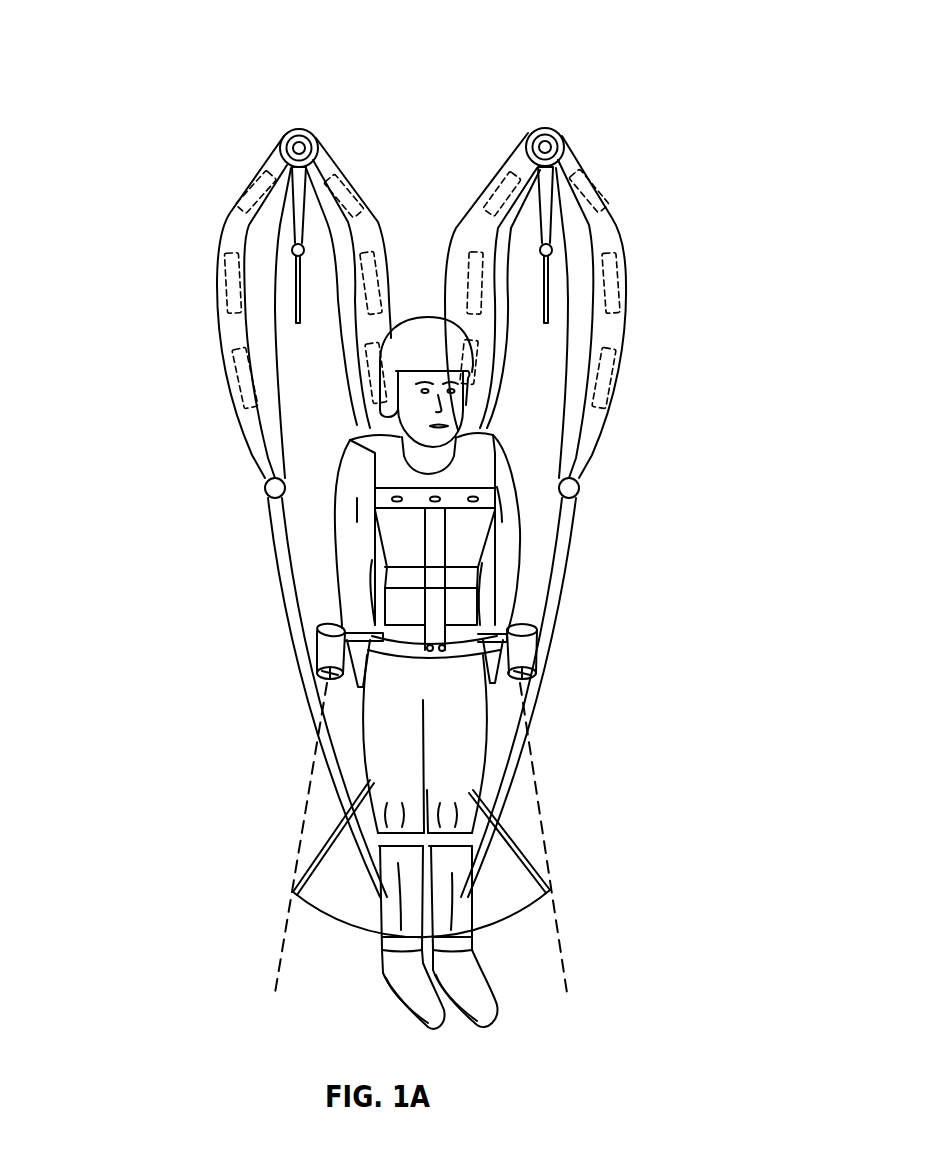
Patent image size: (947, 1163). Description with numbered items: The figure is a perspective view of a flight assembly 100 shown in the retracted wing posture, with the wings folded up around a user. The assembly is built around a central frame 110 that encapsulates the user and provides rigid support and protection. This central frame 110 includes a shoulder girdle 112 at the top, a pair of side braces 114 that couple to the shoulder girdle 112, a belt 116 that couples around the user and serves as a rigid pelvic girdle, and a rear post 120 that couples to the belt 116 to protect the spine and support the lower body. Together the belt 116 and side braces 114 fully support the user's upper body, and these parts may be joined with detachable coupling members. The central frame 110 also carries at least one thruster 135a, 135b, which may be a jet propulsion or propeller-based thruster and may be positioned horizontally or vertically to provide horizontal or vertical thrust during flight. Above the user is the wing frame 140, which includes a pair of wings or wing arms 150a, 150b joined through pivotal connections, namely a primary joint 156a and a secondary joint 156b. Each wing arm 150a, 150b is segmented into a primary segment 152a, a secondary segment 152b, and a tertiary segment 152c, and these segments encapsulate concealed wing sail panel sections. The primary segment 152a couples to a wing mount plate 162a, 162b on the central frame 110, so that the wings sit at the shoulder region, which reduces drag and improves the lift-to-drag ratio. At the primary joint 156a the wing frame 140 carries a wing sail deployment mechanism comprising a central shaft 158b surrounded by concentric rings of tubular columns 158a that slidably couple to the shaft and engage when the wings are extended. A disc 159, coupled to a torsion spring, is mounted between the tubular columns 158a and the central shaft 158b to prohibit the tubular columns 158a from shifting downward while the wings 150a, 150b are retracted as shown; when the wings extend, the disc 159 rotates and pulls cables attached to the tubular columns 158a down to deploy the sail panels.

The personal flight system 100 is at (68, 58).
The central frame 110 is at (480, 652).
The shoulder girdle 112 is at (387, 477).
The side braces 114 is at (373, 558).
The belt 116 is at (327, 670).
The rear post 120 is at (523, 882).
The thruster 135a is at (325, 637).
The thruster 135b is at (522, 662).
The wing frame 140 is at (697, 80).
The wing arm 150a is at (240, 212).
The wing arm 150b is at (608, 218).
The primary segment 152a is at (448, 270).
The secondary segment 152b is at (622, 336).
The tertiary segment 152c is at (535, 714).
The primary joint 156a is at (553, 133).
The secondary joint 156b is at (580, 488).
The tubular columns 158a is at (550, 197).
The central shaft 158b is at (547, 300).
The disc 159 is at (551, 251).
The wing mount plate 162a is at (358, 427).
The wing mount plate 162b is at (487, 428).